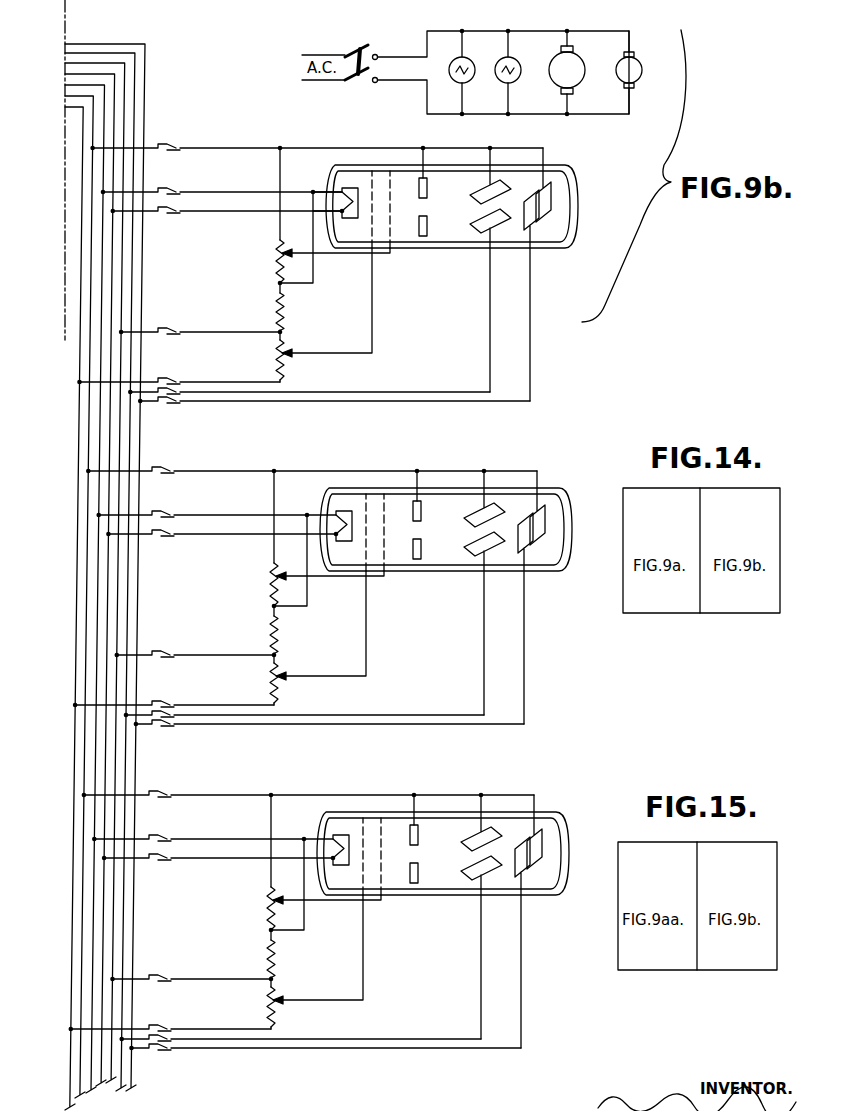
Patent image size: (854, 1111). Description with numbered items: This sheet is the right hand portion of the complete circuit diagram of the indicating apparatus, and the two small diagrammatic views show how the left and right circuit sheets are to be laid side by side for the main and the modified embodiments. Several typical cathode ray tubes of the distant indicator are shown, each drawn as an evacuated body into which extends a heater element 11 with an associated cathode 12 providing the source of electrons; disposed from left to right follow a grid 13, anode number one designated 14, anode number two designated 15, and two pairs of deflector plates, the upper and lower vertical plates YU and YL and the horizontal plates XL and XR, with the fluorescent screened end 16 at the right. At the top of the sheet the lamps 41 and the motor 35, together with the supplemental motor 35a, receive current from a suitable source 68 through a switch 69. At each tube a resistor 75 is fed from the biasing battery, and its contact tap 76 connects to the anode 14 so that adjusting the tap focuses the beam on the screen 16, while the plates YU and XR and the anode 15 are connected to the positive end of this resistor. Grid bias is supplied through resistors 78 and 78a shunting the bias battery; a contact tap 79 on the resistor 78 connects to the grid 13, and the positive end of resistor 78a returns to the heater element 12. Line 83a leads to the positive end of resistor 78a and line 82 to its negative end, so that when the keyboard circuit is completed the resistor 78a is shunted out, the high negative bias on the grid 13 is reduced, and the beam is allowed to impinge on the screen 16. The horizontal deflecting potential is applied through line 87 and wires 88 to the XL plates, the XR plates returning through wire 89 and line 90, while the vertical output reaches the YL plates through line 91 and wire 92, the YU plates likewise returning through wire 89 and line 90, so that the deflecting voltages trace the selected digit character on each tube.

In FIG. 9B, the heater element 11 is at (340, 198).
In FIG. 9B, the cathode 12 is at (348, 188).
In FIG. 9B, the grid 13 is at (377, 225).
In FIG. 9B, the anode number 1 14 is at (400, 200).
In FIG. 9B, the anode number 2 15 is at (427, 238).
In FIG. 9B, the fluorescent screened end 16 is at (576, 221).
In FIG. 14, the fluorescent screened end 16 is at (451, 541).
In FIG. 9B, the motor 35 is at (572, 62).
In FIG. 9B, the supplemental motor 35a is at (627, 66).
In FIG. 9B, the lamps 41 is at (452, 65).
In FIG. 9B, the current source 68 is at (303, 66).
In FIG. 9B, the switch 69 is at (363, 46).
In FIG. 9B, the resistor 75 is at (278, 270).
In FIG. 14, the resistor 75 is at (251, 584).
In FIG. 15, the resistor 75 is at (248, 908).
In FIG. 9B, the contact tap 76 is at (288, 253).
In FIG. 14, the contact tap 76 is at (330, 564).
In FIG. 15, the contact tap 76 is at (327, 888).
In FIG. 9B, the resistor 78 is at (284, 366).
In FIG. 14, the resistor 78 is at (293, 684).
In FIG. 15, the resistor 78 is at (290, 1008).
In FIG. 9B, the resistor 78a is at (284, 307).
In FIG. 14, the resistor 78a is at (301, 635).
In FIG. 15, the resistor 78a is at (298, 959).
In FIG. 9B, the contact tap 79 is at (291, 351).
In FIG. 14, the contact tap 79 is at (321, 625).
In FIG. 15, the contact tap 79 is at (318, 949).
In FIG. 9B, the line 82 is at (123, 77).
In FIG. 9B, the line 83a is at (103, 178).
In FIG. 9B, the line 87 is at (147, 87).
In FIG. 9B, the wires 88 is at (392, 401).
In FIG. 14, the wires 88 is at (330, 739).
In FIG. 15, the wires 88 is at (327, 1061).
In FIG. 9B, the wire 89 is at (238, 148).
In FIG. 9B, the line 90 is at (93, 125).
In FIG. 9B, the line 91 is at (132, 243).
In FIG. 9B, the wire 92 is at (332, 392).
In FIG. 9B, the upper vertical deflector plate YU is at (477, 191).
In FIG. 9B, the lower vertical deflector plate YL is at (470, 222).
In FIG. 9B, the right horizontal deflector plate XR is at (549, 198).
In FIG. 9B, the left horizontal deflector plate XL is at (524, 222).